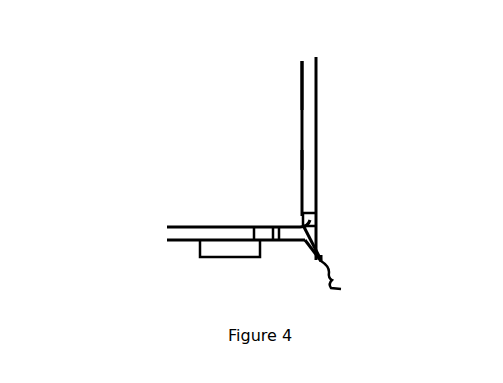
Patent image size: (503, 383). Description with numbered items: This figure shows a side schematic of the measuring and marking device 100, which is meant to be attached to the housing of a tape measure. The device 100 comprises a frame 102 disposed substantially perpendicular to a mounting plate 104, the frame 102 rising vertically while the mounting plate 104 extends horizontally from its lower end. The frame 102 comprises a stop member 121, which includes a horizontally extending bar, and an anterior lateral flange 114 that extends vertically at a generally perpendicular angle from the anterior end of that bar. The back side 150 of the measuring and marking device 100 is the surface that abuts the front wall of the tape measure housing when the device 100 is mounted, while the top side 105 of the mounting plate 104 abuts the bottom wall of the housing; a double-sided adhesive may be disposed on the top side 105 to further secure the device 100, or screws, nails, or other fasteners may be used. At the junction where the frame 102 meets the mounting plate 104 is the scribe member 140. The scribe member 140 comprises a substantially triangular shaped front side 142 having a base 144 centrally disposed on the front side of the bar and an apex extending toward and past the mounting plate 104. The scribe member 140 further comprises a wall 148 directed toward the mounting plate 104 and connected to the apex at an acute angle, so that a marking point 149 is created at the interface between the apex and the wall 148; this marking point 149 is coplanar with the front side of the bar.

The measuring and marking device 100 is at (353, 32).
The frame 102 is at (322, 97).
The anterior lateral flange 114 is at (317, 128).
The stop member 121 is at (312, 160).
The back side 150 is at (299, 82).
The top side 105 is at (213, 225).
The mounting plate 104 is at (183, 244).
The base 144 is at (318, 228).
The front side 142 is at (323, 237).
The wall 148 is at (310, 253).
The marking point 149 is at (351, 284).
The scribe member 140 is at (352, 265).